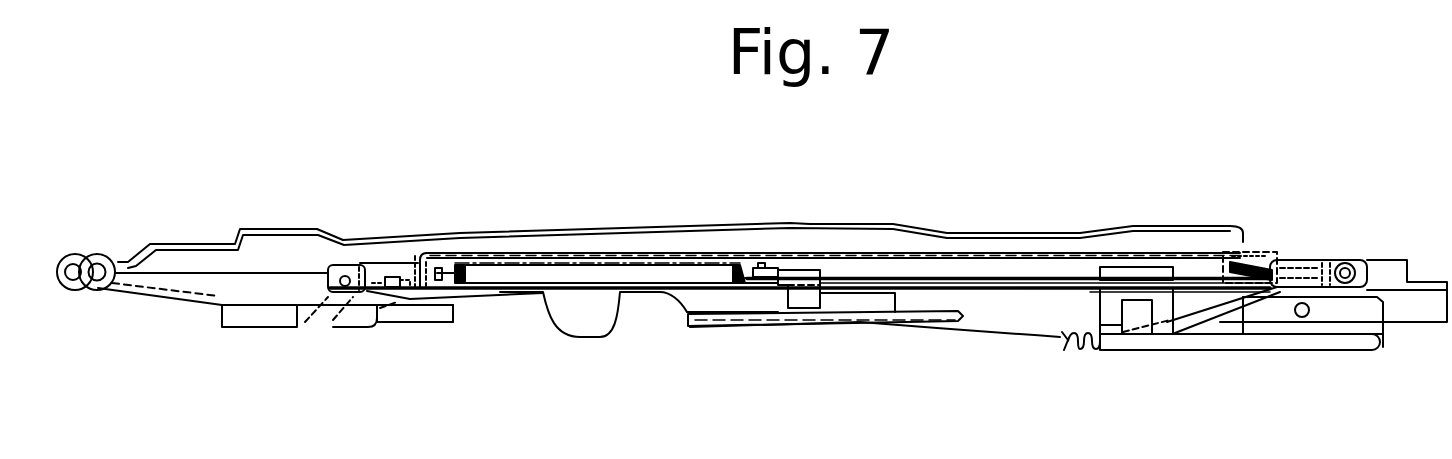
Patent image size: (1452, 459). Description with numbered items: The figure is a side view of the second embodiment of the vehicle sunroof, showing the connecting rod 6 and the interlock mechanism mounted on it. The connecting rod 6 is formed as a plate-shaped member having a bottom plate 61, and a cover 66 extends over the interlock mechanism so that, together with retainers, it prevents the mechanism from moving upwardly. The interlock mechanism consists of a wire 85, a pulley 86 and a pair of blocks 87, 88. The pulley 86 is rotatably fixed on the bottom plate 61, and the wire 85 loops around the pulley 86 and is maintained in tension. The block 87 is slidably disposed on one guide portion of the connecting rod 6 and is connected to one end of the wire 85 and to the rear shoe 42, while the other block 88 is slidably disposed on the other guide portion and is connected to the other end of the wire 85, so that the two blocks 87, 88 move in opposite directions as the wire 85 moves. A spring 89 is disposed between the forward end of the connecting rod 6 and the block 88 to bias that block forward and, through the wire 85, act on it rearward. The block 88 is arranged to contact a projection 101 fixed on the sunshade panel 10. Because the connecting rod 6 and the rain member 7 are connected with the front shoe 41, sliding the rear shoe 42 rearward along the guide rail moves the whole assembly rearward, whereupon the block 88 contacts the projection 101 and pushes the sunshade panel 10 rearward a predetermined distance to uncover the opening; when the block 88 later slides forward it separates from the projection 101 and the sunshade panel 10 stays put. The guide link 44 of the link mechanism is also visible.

The guide link 44 is at (553, 230).
The cover 66 is at (806, 252).
The wire 85 is at (940, 270).
The block 87 is at (1113, 267).
The pulley 86 is at (1236, 248).
The rain member 7 is at (1387, 270).
The front shoe 41 is at (418, 312).
The spring 89 is at (515, 275).
The block 88 is at (802, 303).
The projection 101 is at (858, 300).
The sunshade panel 10 is at (918, 324).
The bottom plate 61 is at (982, 288).
The connecting rod 6 is at (1027, 288).
The rear shoe 42 is at (1333, 310).